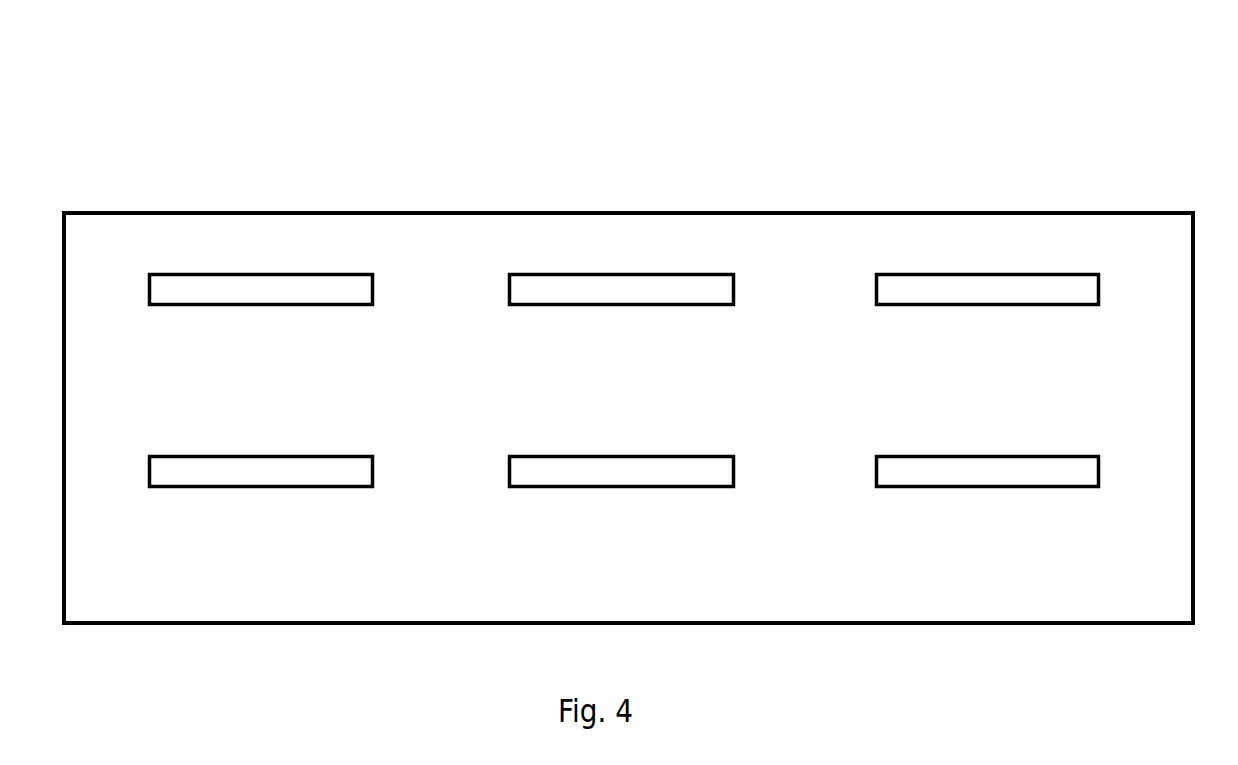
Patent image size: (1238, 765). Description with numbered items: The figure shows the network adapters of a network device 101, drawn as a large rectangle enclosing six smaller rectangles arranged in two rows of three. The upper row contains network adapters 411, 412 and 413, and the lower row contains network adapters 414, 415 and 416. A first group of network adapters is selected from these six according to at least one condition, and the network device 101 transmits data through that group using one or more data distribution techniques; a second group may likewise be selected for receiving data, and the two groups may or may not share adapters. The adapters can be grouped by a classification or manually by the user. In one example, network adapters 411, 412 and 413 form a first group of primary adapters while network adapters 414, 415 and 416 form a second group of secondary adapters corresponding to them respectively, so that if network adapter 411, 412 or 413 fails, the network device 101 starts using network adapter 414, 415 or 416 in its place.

The network device 101 is at (687, 212).
The network adapter 411 is at (192, 305).
The network adapter 412 is at (552, 305).
The network adapter 413 is at (927, 305).
The network adapter 414 is at (192, 487).
The network adapter 415 is at (552, 487).
The network adapter 416 is at (927, 487).